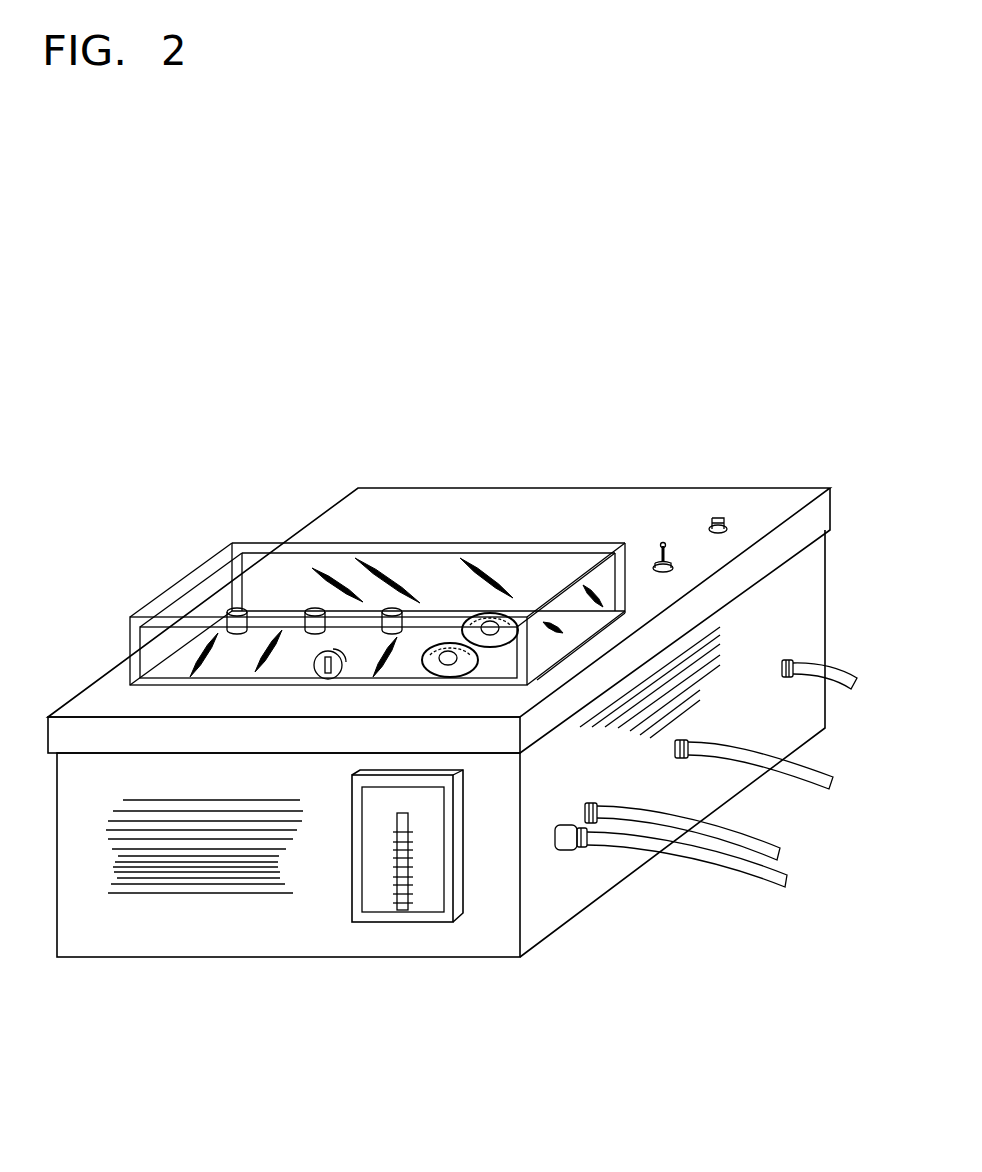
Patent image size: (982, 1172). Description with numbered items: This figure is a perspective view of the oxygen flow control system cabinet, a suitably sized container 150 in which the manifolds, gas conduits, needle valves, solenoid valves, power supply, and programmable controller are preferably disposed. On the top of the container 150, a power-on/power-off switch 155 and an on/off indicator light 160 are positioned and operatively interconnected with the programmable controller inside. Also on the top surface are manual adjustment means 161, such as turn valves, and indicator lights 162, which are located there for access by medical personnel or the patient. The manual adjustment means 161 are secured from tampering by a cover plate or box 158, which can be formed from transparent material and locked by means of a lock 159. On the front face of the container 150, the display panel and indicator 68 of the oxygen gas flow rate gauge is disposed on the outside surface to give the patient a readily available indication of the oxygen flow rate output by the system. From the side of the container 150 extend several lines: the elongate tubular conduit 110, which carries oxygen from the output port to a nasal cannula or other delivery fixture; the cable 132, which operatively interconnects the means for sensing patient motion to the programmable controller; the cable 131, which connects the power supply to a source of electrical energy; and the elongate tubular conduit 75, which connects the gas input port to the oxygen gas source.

The container 150 is at (812, 595).
The cover plate or box 158 is at (498, 542).
The indicator lights 162 is at (315, 609).
The lock 159 is at (365, 650).
The manual adjustment means 161 is at (492, 613).
The power-on/power-off switch 155 is at (673, 556).
The on/off indicator light 160 is at (730, 522).
The elongate tubular conduit 110 is at (833, 665).
The cable 132 is at (803, 772).
The cable 131 is at (743, 838).
The elongate tubular conduit 75 is at (693, 855).
The display panel and indicator 68 is at (420, 903).